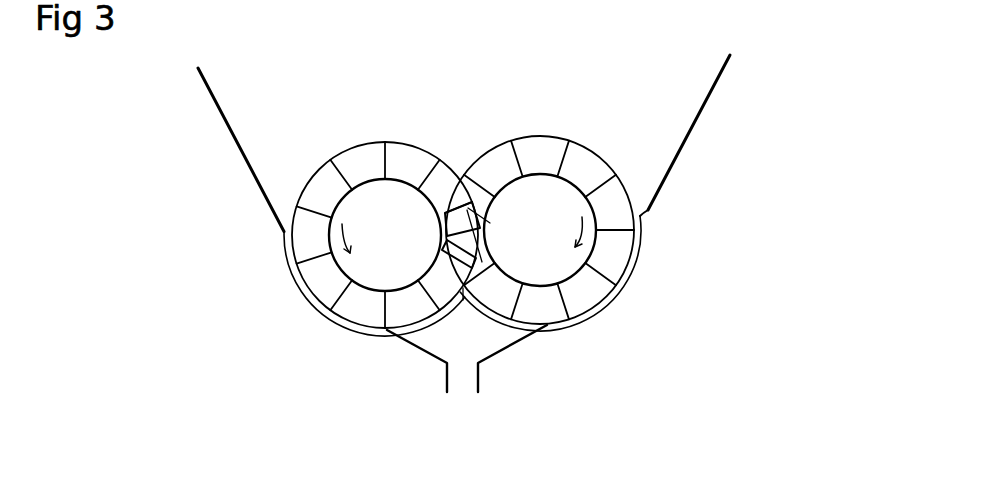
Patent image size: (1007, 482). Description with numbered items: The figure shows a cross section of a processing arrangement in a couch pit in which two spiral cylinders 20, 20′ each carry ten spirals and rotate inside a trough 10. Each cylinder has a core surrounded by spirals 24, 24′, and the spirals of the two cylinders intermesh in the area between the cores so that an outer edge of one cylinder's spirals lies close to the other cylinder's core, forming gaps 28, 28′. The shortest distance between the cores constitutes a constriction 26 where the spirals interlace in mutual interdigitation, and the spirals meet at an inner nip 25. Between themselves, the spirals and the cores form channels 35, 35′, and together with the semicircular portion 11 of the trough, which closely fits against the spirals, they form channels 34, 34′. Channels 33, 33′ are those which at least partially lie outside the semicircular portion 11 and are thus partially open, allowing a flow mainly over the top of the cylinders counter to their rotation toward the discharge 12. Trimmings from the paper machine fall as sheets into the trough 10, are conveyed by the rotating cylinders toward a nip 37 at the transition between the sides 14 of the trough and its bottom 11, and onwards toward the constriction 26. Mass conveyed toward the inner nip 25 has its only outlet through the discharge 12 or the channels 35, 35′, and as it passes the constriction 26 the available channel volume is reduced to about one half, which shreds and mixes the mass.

The trough 10 is at (690, 113).
The semicircular portion of the trough 11 is at (603, 302).
The discharge 12 is at (456, 383).
The sides of the trough 14 is at (687, 147).
The spiral cylinder 20 is at (530, 205).
The spiral cylinder 20′ is at (363, 210).
The spirals 24 is at (350, 310).
The spirals 24′ is at (438, 285).
The inner nip 25 is at (463, 290).
The constriction 26 is at (438, 230).
The gap 28 is at (386, 142).
The gap 28′ is at (472, 203).
The channels 33 is at (620, 205).
The channels 33′ is at (305, 230).
The channels 34 is at (620, 248).
The channels 34′ is at (318, 278).
The channels 35 is at (482, 262).
The channels 35′ is at (468, 208).
The nip 37 is at (650, 217).